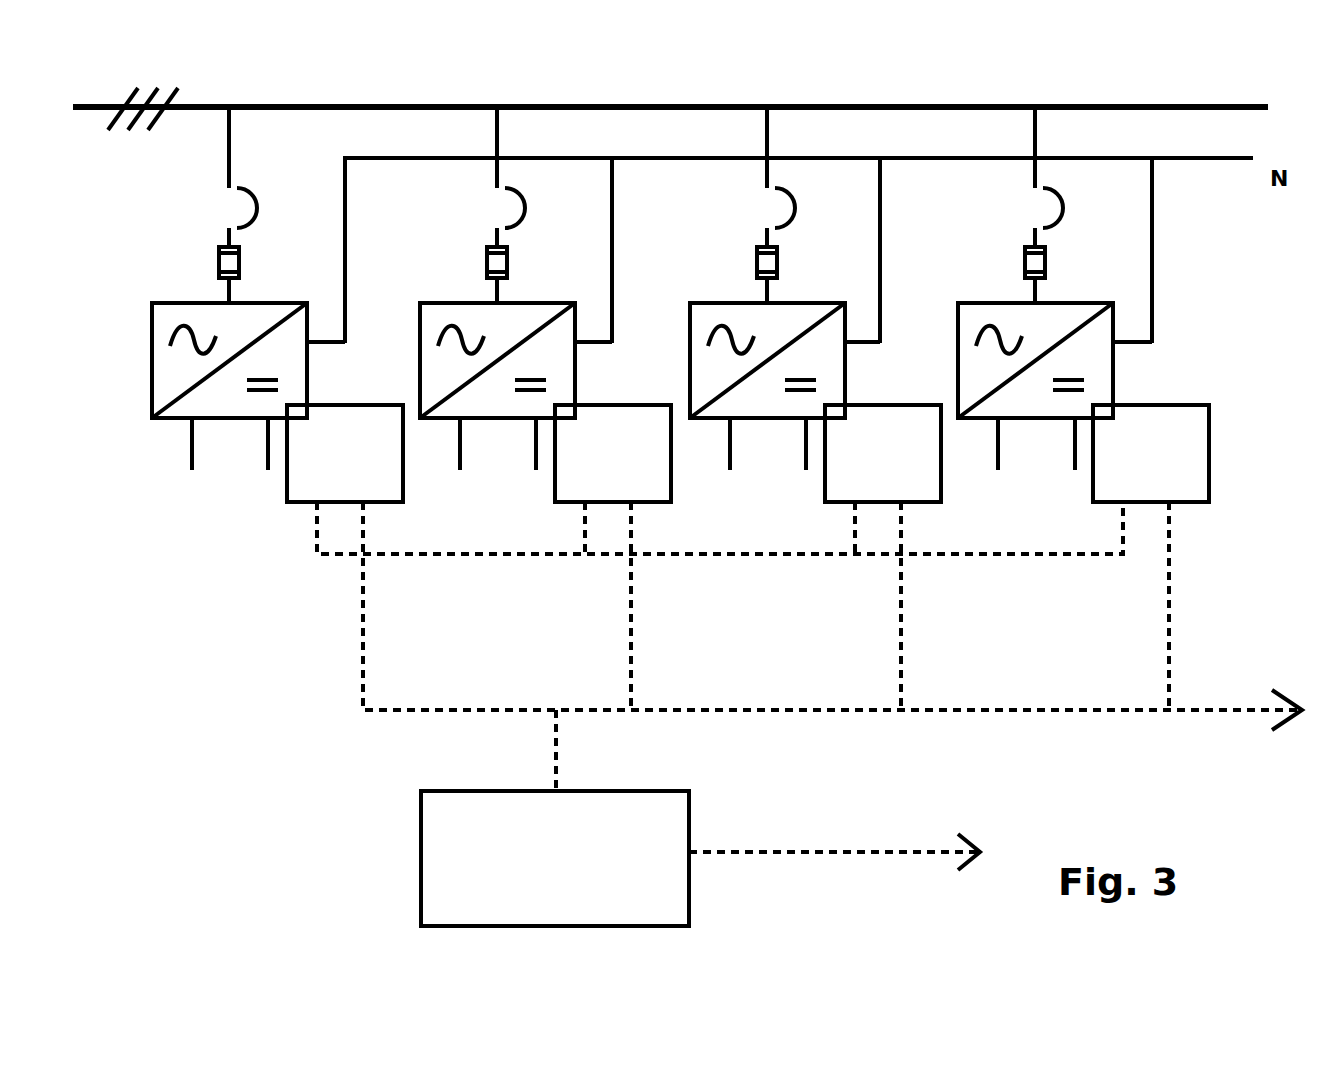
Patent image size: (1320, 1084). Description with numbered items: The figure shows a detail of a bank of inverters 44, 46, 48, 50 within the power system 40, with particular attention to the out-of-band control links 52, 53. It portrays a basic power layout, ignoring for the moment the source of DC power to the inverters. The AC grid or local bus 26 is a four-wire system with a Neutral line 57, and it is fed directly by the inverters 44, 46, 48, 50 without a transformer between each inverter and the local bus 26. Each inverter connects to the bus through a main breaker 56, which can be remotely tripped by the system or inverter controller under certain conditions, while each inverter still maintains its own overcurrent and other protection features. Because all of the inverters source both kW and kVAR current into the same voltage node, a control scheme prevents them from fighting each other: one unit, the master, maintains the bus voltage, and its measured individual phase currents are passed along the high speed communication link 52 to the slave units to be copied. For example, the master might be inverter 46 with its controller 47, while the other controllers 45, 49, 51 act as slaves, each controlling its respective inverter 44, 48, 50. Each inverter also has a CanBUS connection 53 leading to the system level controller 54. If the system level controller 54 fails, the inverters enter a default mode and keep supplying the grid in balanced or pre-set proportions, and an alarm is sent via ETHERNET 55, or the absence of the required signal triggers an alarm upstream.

The AC grid (local bus) 26 is at (1197, 100).
The power conversion system 40 is at (278, 680).
The inverter 44 is at (148, 322).
The controller 45 is at (372, 403).
The inverter 46 is at (416, 320).
The controller 47 is at (627, 403).
The inverter 48 is at (686, 320).
The controller 49 is at (912, 403).
The inverter 50 is at (953, 322).
The controller 51 is at (1213, 432).
The high speed communication link 52 is at (1057, 565).
The CanBUS connection 53 is at (1018, 718).
The system level controller 54 is at (620, 787).
The ETHERNET 55 is at (833, 862).
The main breaker 56 is at (265, 210).
The Neutral line 57 is at (1196, 170).